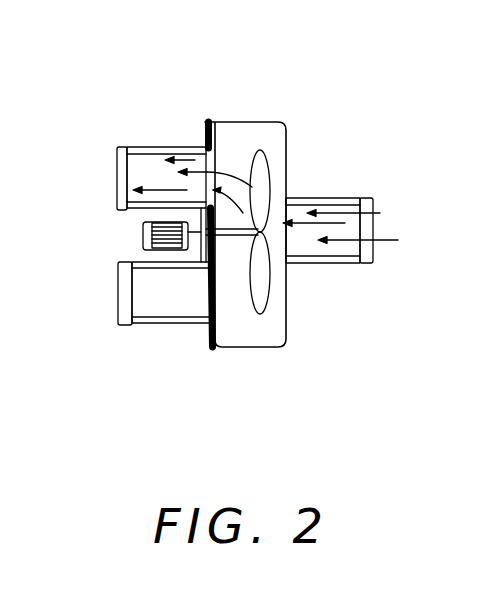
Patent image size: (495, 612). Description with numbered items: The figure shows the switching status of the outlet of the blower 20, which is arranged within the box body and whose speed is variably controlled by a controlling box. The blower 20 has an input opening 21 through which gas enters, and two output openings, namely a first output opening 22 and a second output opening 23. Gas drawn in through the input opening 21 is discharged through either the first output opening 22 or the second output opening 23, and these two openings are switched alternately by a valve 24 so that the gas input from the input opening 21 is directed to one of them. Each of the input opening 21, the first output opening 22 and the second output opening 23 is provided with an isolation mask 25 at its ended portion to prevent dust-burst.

The blower 20 is at (270, 325).
The input opening 21 is at (323, 200).
The first output opening 22 is at (148, 167).
The second output opening 23 is at (167, 293).
The valve 24 is at (218, 288).
The isolation mask 25 is at (117, 180).